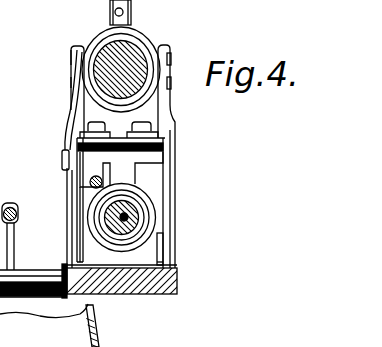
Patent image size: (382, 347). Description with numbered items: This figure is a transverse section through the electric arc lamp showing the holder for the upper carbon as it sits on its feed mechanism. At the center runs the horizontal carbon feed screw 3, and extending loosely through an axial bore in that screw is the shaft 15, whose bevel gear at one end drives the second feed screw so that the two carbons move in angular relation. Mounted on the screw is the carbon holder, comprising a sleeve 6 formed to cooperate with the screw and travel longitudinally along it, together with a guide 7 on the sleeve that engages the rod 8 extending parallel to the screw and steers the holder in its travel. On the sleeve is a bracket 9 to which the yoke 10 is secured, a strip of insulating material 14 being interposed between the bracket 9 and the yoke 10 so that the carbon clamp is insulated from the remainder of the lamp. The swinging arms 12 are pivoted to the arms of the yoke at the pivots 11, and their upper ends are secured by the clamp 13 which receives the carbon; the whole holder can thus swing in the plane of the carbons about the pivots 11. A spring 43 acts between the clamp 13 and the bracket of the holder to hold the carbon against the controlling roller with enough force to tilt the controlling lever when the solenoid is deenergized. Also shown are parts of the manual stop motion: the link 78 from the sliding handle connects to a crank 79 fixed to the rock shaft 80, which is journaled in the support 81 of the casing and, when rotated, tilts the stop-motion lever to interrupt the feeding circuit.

The carbon feed screw 3 is at (129, 204).
The sleeve 6 is at (131, 212).
The guide 7 is at (90, 192).
The rod 8 is at (91, 178).
The bracket 9 is at (121, 169).
The yoke 10 is at (150, 140).
The pivots 11 is at (100, 53).
The swinging arms 12 is at (172, 214).
The clamp 13 is at (151, 47).
The strip of insulating material 14 is at (163, 146).
The shaft 15 is at (123, 222).
The spring 43 is at (70, 113).
The link 78 is at (18, 213).
The crank 79 is at (11, 256).
The rock shaft 80 is at (35, 285).
The support 81 is at (152, 285).